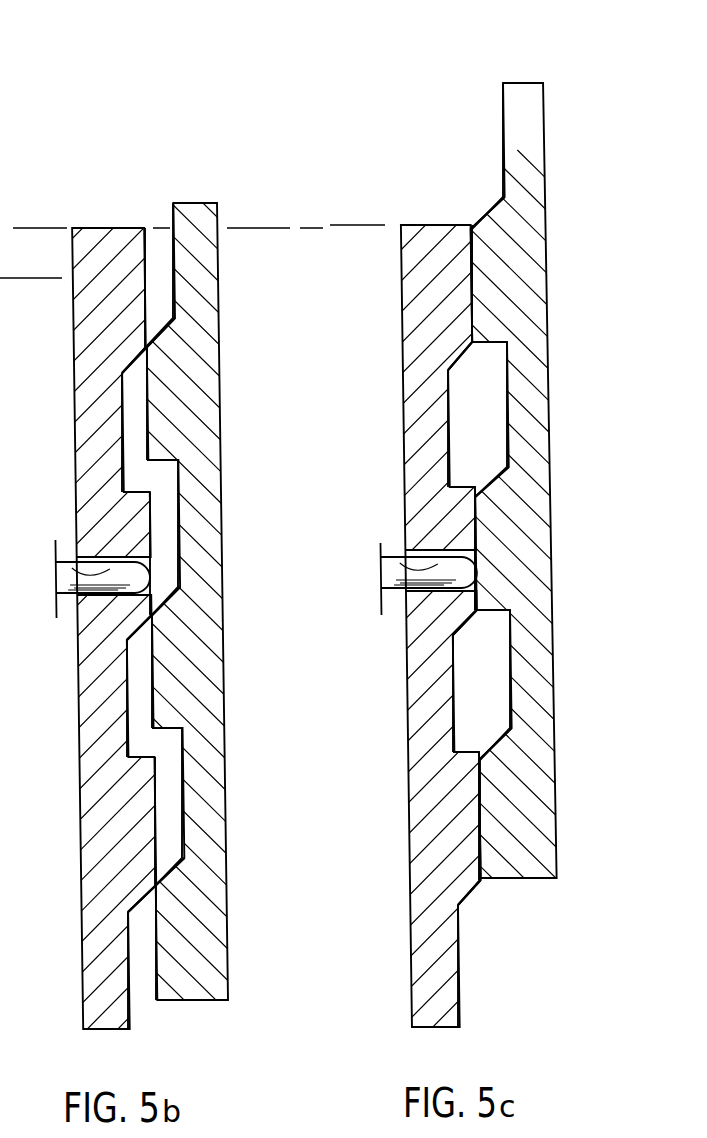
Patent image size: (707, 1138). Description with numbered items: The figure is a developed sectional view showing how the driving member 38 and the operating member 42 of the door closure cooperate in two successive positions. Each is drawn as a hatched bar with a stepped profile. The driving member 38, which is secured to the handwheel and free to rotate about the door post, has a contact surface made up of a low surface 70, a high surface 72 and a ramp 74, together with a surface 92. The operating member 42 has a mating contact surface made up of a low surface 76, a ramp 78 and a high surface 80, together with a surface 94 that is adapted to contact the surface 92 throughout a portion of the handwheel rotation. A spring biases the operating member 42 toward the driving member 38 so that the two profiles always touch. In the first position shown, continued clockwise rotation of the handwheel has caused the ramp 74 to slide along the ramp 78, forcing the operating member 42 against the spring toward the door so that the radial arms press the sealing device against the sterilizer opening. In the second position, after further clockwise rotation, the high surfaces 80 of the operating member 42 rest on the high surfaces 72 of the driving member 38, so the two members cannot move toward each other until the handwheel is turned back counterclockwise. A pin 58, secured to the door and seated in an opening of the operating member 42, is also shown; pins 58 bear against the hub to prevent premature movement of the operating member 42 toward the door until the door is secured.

In FIG. 5B, the driving member 38 is at (195, 207).
In FIG. 5C, the driving member 38 is at (501, 95).
In FIG. 5B, the operating member 42 is at (97, 255).
In FIG. 5C, the operating member 42 is at (440, 230).
In FIG. 5B, the pin 58 is at (58, 556).
In FIG. 5C, the pin 58 is at (408, 567).
In FIG. 5B, the low surface 70 is at (173, 277).
In FIG. 5C, the low surface 70 is at (503, 163).
In FIG. 5B, the high surface 72 is at (148, 443).
In FIG. 5C, the high surface 72 is at (472, 283).
In FIG. 5B, the ramp 74 is at (168, 325).
In FIG. 5C, the ramp 74 is at (495, 214).
In FIG. 5B, the low surface 76 is at (123, 433).
In FIG. 5C, the low surface 76 is at (448, 443).
In FIG. 5B, the ramp 78 is at (122, 385).
In FIG. 5C, the ramp 78 is at (452, 370).
In FIG. 5B, the high surface 80 is at (145, 279).
In FIG. 5C, the high surface 80 is at (472, 313).
In FIG. 5B, the surface 92 is at (178, 490).
In FIG. 5C, the surface 92 is at (497, 366).
In FIG. 5B, the surface 94 is at (125, 228).
In FIG. 5C, the surface 94 is at (420, 225).